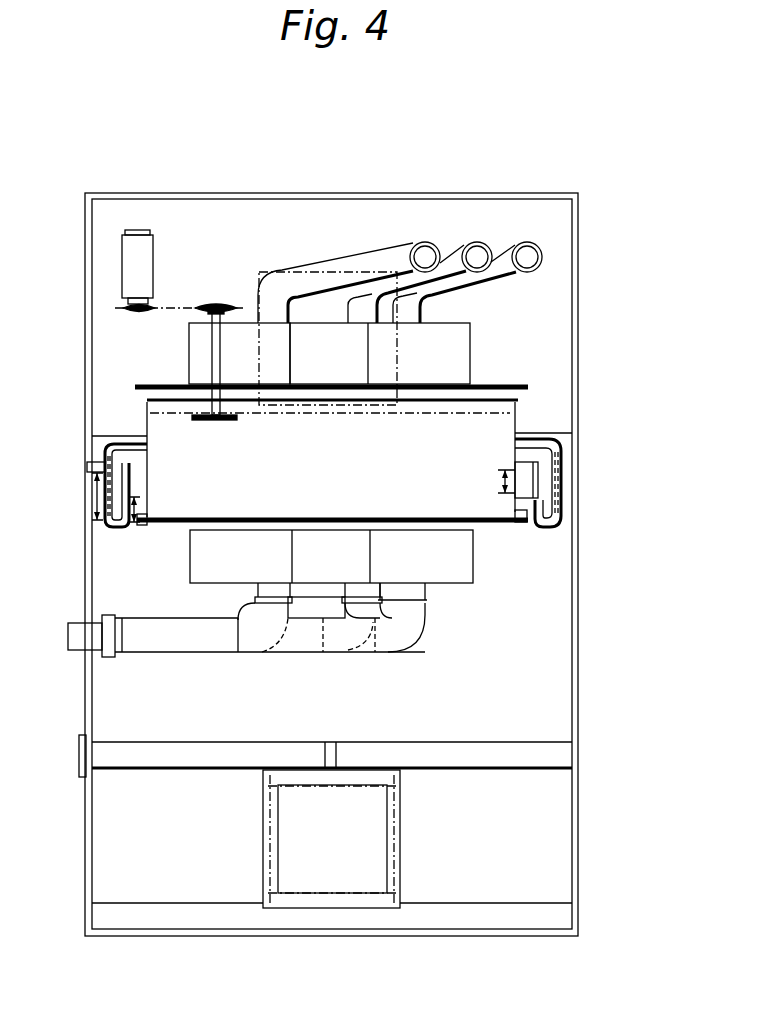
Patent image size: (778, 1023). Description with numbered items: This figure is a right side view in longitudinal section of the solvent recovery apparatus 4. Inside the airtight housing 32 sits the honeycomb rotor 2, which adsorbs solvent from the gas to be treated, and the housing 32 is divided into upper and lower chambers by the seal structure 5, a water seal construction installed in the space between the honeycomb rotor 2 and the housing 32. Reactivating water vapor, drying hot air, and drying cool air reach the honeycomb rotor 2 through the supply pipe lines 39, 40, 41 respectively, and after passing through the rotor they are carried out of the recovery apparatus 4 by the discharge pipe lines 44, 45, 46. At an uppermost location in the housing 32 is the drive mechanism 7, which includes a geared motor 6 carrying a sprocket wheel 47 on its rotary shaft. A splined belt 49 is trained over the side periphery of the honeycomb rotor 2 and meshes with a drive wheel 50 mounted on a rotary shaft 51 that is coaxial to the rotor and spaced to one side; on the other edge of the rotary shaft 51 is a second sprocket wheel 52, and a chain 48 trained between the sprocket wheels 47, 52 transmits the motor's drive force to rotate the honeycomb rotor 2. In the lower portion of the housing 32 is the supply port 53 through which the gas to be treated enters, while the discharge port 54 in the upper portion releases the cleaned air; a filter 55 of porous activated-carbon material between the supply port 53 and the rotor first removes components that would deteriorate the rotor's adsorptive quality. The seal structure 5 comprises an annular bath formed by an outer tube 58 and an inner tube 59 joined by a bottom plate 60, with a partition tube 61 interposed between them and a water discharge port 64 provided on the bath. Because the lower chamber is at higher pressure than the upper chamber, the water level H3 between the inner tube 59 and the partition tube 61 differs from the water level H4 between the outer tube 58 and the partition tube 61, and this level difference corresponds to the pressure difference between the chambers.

The honeycomb rotor 2 is at (482, 502).
The recovery apparatus 4 is at (537, 115).
The seal structure 5 is at (542, 410).
The geared motor 6 is at (133, 258).
The drive mechanism 7 is at (196, 277).
The housing 32 is at (578, 588).
The supply pipe line 39 is at (397, 255).
The supply pipe line 40 is at (455, 253).
The supply pipe line 41 is at (505, 252).
The discharge pipe line 44 is at (260, 593).
The discharge pipe line 45 is at (353, 592).
The discharge pipe line 46 is at (412, 622).
The sprocket wheel 47 is at (128, 312).
The chain 48 is at (167, 307).
The belt 49 is at (465, 413).
The drive wheel 50 is at (232, 421).
The rotary shaft 51 is at (215, 343).
The sprocket wheel 52 is at (217, 306).
The supply port 53 is at (370, 885).
The discharge port 54 is at (320, 270).
The filter 55 is at (297, 750).
The outer tube 58 is at (563, 478).
The inner tube 59 is at (533, 505).
The bottom plate 60 is at (553, 523).
The partition tube 61 is at (558, 458).
The water discharge port 64 is at (100, 462).
The water level H3 is at (138, 506).
The water level H4 is at (92, 500).